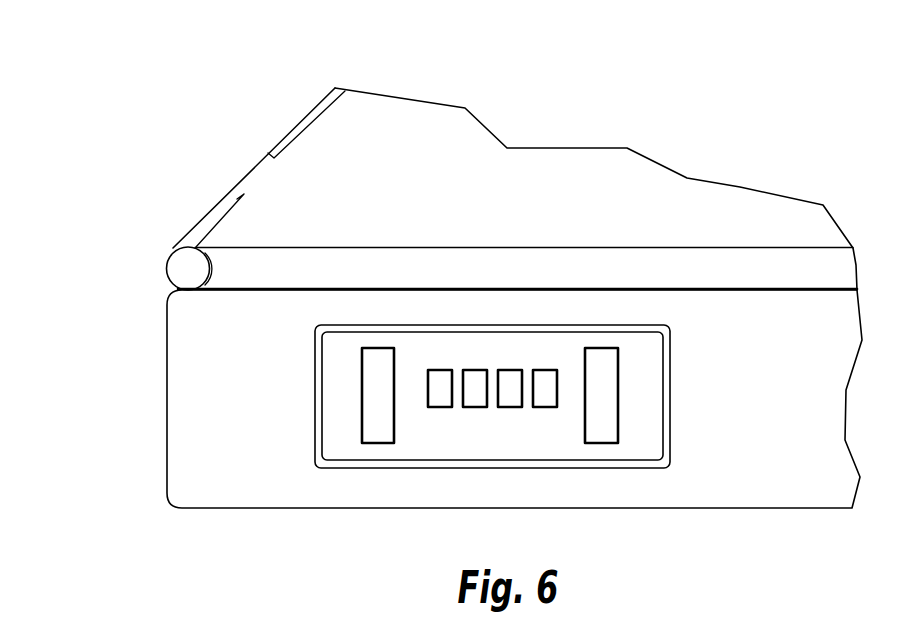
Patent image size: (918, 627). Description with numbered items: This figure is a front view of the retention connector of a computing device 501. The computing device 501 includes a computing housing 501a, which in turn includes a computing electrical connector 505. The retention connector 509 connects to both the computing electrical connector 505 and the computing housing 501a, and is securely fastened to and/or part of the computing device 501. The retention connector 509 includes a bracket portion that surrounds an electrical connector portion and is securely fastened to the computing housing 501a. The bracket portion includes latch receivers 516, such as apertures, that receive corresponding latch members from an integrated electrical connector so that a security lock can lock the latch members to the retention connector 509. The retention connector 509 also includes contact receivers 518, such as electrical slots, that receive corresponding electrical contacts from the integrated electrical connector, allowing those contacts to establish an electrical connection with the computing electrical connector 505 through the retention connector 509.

The computing device 501 is at (495, 47).
The computing housing 501a is at (165, 366).
The computing electrical connector 505 is at (670, 392).
The retention connector 509 is at (674, 328).
The latch receivers 516 is at (362, 349).
The contact receivers 518 is at (538, 370).